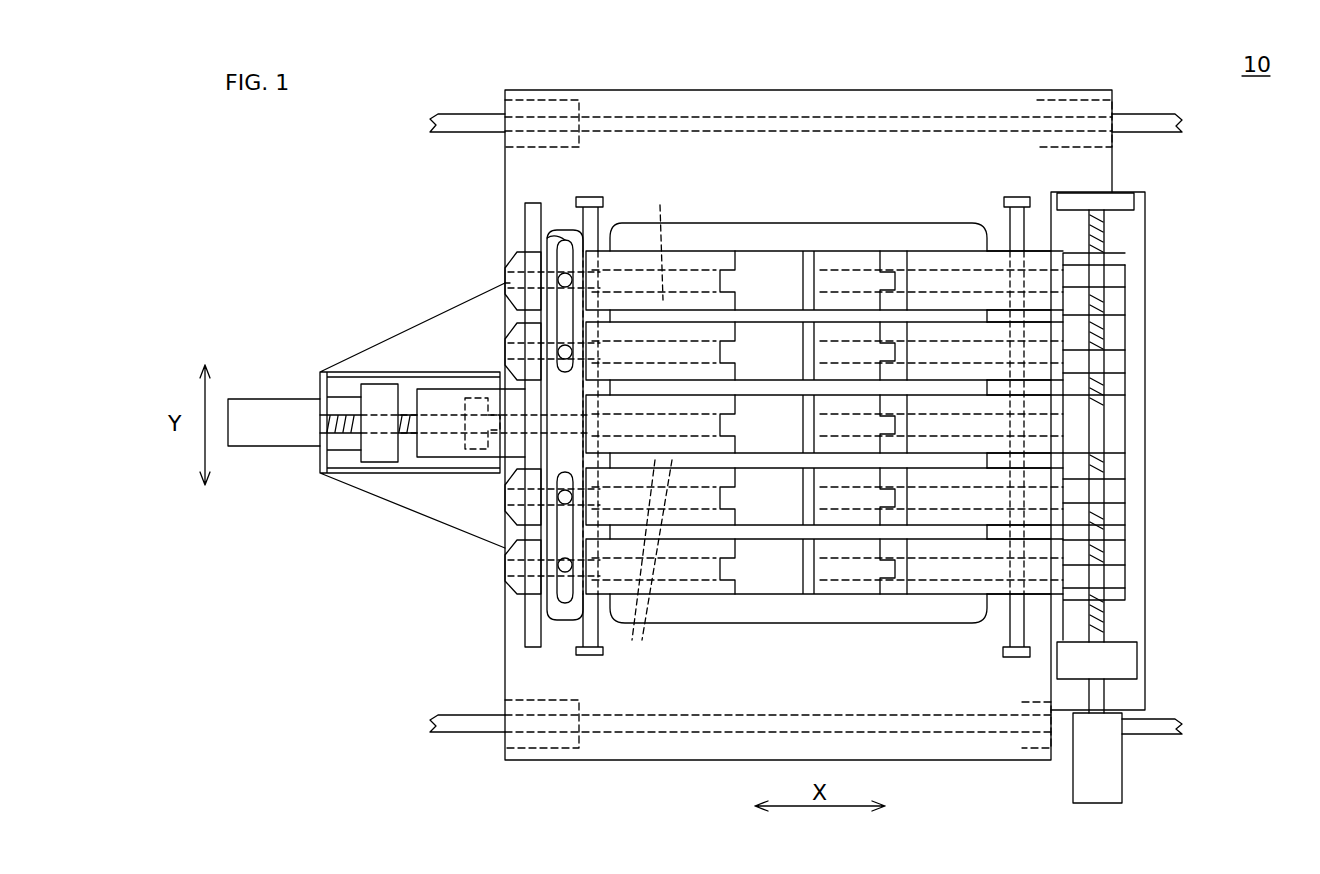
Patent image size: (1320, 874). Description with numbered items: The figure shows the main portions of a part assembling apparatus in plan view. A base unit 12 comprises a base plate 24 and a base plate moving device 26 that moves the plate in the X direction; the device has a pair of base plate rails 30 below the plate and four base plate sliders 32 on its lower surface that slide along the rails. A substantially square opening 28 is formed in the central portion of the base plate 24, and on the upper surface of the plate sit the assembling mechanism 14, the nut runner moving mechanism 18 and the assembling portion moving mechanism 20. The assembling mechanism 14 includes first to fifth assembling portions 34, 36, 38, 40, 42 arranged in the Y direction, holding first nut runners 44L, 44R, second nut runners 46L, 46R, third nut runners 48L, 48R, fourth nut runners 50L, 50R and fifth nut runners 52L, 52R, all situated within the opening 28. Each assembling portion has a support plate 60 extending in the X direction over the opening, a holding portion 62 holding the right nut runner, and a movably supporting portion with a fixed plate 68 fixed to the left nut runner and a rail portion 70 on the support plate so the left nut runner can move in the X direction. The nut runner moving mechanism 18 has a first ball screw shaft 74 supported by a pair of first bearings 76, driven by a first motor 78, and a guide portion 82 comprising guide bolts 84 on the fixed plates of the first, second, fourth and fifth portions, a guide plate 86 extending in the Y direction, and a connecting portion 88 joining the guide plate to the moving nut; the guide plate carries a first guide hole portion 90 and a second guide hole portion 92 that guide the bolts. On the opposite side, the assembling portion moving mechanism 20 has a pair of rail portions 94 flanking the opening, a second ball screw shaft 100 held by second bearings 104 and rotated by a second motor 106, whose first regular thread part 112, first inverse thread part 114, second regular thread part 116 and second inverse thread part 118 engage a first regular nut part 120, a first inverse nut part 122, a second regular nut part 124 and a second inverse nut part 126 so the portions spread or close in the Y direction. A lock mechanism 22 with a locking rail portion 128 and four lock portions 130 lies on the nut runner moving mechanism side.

The base unit 12 is at (994, 80).
The assembling mechanism 14 is at (935, 192).
The nut runner moving mechanism 18 is at (404, 352).
The assembling portion moving mechanism 20 is at (1140, 432).
The lock mechanism 22 is at (512, 614).
The base plate 24 is at (905, 90).
The base plate moving device 26 is at (1158, 105).
The opening 28 is at (782, 223).
The base plate rail 30 is at (1184, 128).
The base plate slider 32 is at (547, 100).
The first assembling portion 34 is at (1068, 556).
The second assembling portion 36 is at (1068, 530).
The third assembling portion 38 is at (1068, 393).
The fourth assembling portion 40 is at (1105, 334).
The fifth assembling portion 42 is at (1105, 302).
The first nut runner 44L is at (820, 556).
The first nut runner 44R is at (895, 573).
The second nut runner 46L is at (820, 485).
The second nut runner 46R is at (895, 502).
The third nut runner 48L is at (820, 412).
The third nut runner 48R is at (895, 429).
The fourth nut runner 50L is at (820, 339).
The fourth nut runner 50R is at (895, 356).
The fifth nut runner 52L is at (820, 268).
The fifth nut runner 52R is at (895, 285).
The support plate 60 is at (1065, 268).
The holding portion 62 is at (896, 274).
The fixed plate 68 is at (738, 268).
The rail portion 70 is at (728, 287).
The first ball screw shaft 74 is at (350, 425).
The first bearing 76 is at (373, 462).
The first motor 78 is at (275, 410).
The guide portion 82 is at (571, 631).
The guide bolt 84 is at (518, 282).
The guide plate 86 is at (553, 232).
The connecting portion 88 is at (418, 435).
The first guide hole portion 90 is at (560, 600).
The second guide hole portion 92 is at (545, 240).
The rail portion 94 is at (598, 235).
The second ball screw shaft 100 is at (1100, 702).
The second bearing 104 is at (1135, 203).
The second motor 106 is at (1115, 782).
The first regular thread part 112 is at (1100, 345).
The first inverse thread part 114 is at (1100, 465).
The second regular thread part 116 is at (1100, 238).
The second inverse thread part 118 is at (1098, 630).
The first regular nut part 120 is at (1120, 366).
The first inverse nut part 122 is at (1120, 494).
The second regular nut part 124 is at (1120, 276).
The second inverse nut part 126 is at (1120, 578).
The locking rail portion 128 is at (533, 648).
The lock portion 130 is at (505, 272).